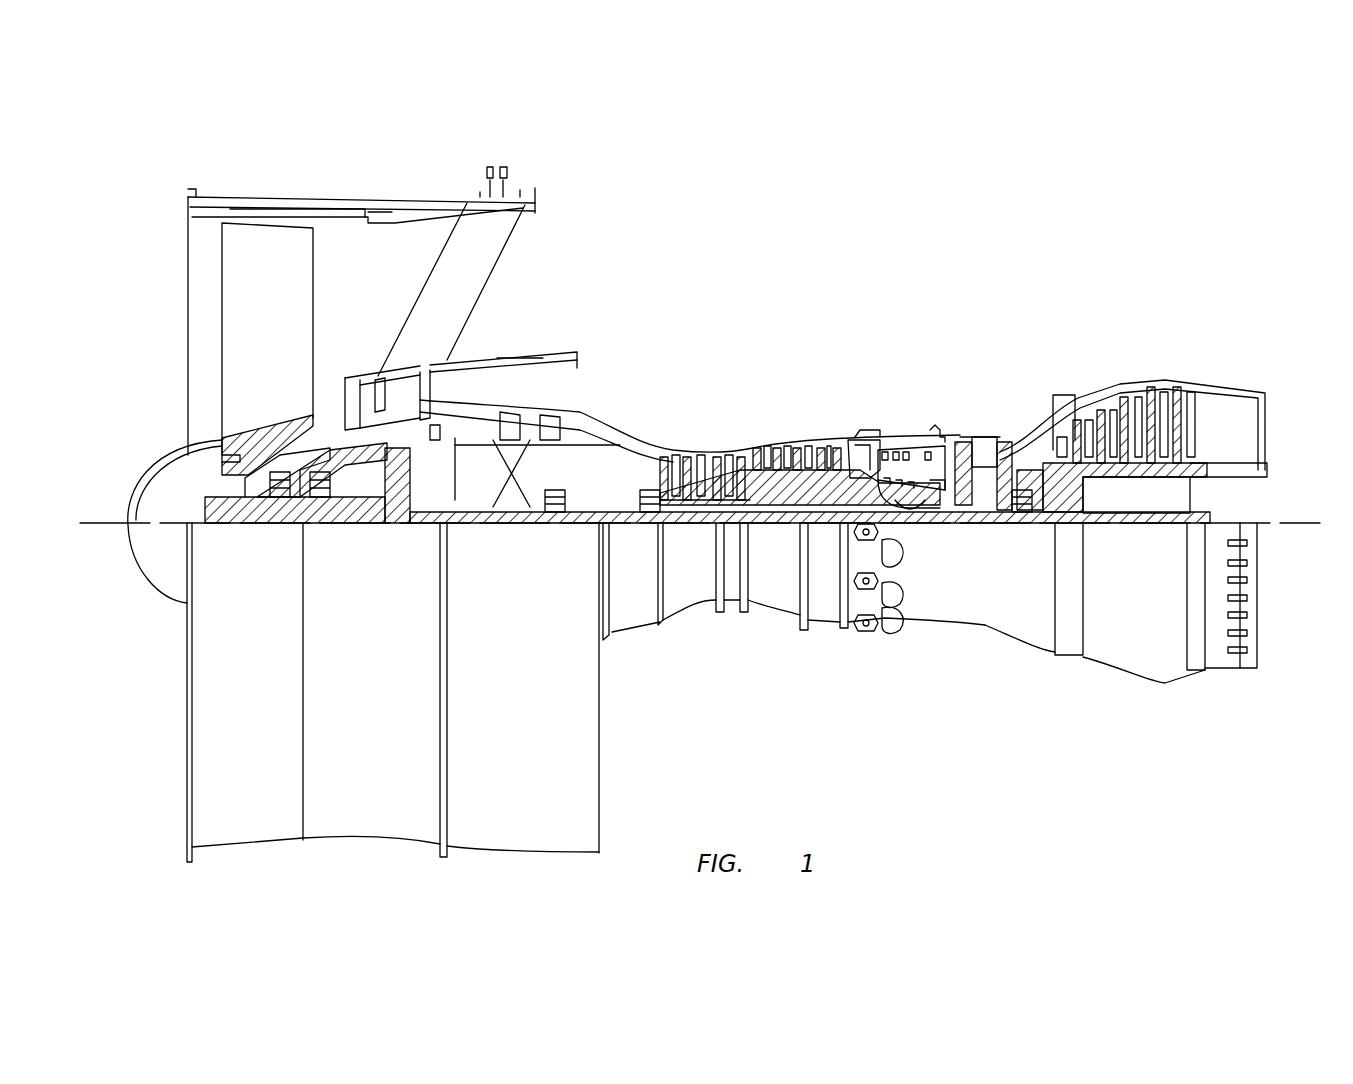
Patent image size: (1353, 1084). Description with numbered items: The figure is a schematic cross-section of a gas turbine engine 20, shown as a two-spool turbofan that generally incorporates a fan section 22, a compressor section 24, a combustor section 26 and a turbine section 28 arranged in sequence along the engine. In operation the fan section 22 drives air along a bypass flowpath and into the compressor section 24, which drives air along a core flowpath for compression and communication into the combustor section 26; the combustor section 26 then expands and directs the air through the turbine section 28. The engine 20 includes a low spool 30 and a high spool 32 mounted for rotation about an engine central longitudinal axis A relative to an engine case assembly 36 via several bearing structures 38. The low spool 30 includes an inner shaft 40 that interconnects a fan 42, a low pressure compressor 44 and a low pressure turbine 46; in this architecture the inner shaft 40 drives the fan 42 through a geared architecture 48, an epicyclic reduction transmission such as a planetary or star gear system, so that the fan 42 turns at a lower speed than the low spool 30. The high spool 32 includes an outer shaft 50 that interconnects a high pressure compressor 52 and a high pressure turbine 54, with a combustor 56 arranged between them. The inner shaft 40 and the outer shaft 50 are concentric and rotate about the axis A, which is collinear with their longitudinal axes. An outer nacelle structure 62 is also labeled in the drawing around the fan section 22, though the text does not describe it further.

The gas turbine engine 20 is at (940, 243).
The fan section 22 is at (443, 187).
The compressor section 24 is at (450, 322).
The combustor section 26 is at (962, 322).
The turbine section 28 is at (1197, 322).
The low spool 30 is at (778, 528).
The high spool 32 is at (820, 488).
The engine case assembly 36 is at (826, 625).
The bearing structures 38 is at (276, 497).
The inner shaft 40 is at (620, 535).
The fan 42 is at (276, 340).
The low pressure compressor 44 is at (527, 417).
The low pressure turbine 46 is at (1130, 396).
The geared architecture 48 is at (397, 505).
The outer shaft 50 is at (915, 518).
The high pressure compressor 52 is at (762, 490).
The high pressure turbine 54 is at (980, 432).
The combustor 56 is at (908, 465).
The nacelle 62 is at (443, 207).
The engine central longitudinal axis A is at (1322, 522).